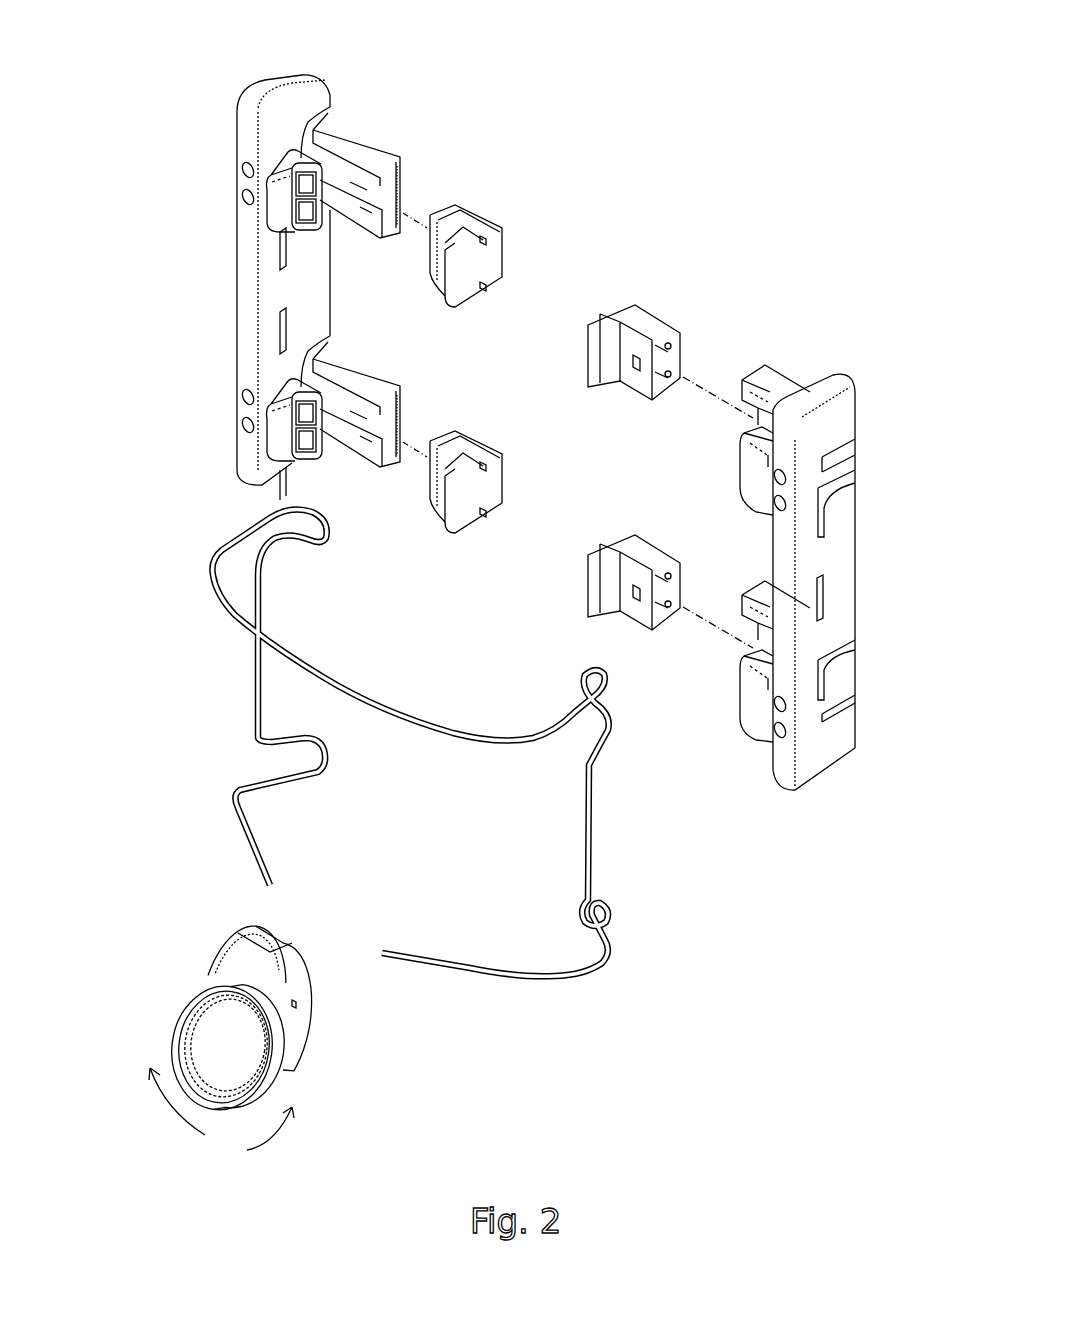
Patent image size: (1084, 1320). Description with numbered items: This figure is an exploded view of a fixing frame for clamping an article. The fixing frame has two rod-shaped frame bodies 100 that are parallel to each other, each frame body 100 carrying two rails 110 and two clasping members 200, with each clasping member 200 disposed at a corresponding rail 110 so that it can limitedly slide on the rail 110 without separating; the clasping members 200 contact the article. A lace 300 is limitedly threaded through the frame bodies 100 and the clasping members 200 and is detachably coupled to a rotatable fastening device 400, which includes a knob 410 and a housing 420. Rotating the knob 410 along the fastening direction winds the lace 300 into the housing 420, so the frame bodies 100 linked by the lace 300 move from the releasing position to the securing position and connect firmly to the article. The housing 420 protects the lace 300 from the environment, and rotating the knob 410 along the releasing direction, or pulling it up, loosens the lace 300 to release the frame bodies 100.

The frame body 100 is at (275, 93).
The rail 110 is at (403, 207).
The clasping member 200 is at (490, 256).
The lace 300 is at (210, 568).
The rotatable fastening device 400 is at (202, 1003).
The knob 410 is at (180, 1028).
The housing 420 is at (230, 967).